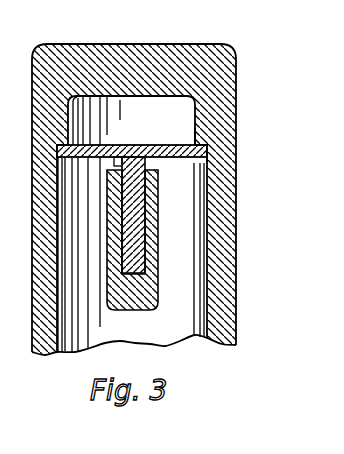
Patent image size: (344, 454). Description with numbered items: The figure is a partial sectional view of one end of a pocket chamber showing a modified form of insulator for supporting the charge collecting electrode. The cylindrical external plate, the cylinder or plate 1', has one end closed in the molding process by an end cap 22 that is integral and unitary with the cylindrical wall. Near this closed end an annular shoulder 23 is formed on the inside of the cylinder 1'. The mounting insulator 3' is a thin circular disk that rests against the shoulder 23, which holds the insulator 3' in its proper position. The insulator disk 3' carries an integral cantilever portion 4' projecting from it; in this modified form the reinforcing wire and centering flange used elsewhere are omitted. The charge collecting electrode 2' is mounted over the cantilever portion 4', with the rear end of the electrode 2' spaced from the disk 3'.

The cylinder or plate 1' is at (164, 199).
The end cap 22 is at (132, 44).
The annular shoulder 23 is at (205, 142).
The charge collecting electrode 2' is at (167, 224).
The mounting insulator 3' is at (177, 164).
The cantilever portion 4' is at (205, 215).